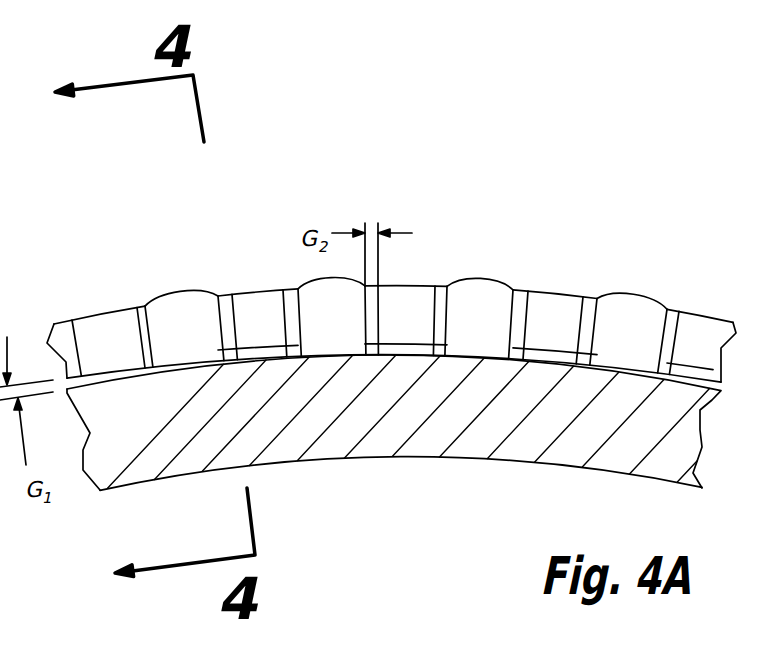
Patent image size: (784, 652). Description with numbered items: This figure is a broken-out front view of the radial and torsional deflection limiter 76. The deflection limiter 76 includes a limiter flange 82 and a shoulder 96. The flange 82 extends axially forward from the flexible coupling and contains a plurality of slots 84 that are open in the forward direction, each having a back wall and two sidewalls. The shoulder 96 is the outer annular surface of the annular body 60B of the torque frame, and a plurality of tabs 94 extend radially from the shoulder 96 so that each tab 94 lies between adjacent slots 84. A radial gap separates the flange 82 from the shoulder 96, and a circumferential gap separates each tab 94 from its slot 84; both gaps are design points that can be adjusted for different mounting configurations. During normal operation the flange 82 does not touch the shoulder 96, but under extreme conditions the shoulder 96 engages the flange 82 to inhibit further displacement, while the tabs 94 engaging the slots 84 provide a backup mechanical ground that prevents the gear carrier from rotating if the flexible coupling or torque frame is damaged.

The deflection limiter 76 is at (141, 265).
The slots 84 is at (136, 332).
The limiter flange 82 is at (544, 316).
The shoulder 96 is at (101, 380).
The tabs 94 is at (182, 347).
The annular body 60B is at (665, 405).